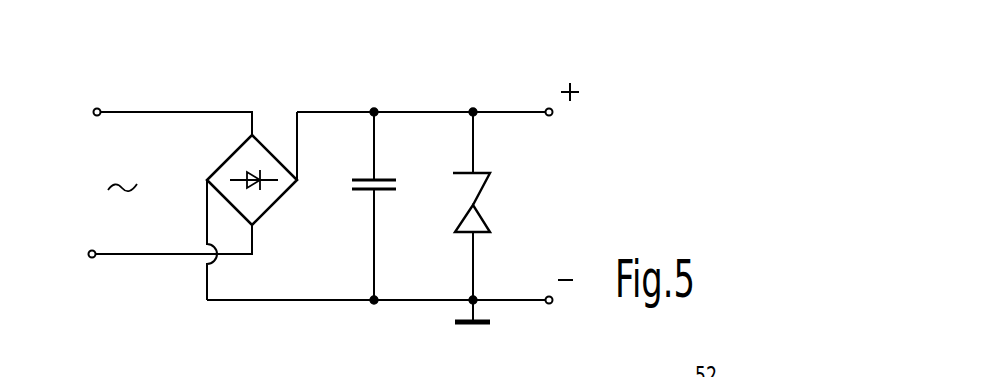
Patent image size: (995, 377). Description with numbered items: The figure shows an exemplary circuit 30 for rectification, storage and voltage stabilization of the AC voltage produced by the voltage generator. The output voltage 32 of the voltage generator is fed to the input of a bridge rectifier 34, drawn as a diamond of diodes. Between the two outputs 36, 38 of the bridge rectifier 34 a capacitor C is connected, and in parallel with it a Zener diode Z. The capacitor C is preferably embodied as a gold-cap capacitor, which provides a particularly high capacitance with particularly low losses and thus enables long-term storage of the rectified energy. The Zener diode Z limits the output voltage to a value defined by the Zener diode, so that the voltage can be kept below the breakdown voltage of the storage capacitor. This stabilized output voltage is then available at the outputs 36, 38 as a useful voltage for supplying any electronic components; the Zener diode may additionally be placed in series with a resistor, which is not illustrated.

The circuit 30 is at (648, 70).
The output voltage 32 is at (97, 148).
The bridge rectifier 34 is at (248, 150).
The output of the bridge rectifier 36 is at (313, 300).
The output of the bridge rectifier 38 is at (437, 110).
The capacitor C is at (380, 165).
The Zener diode Z is at (483, 200).